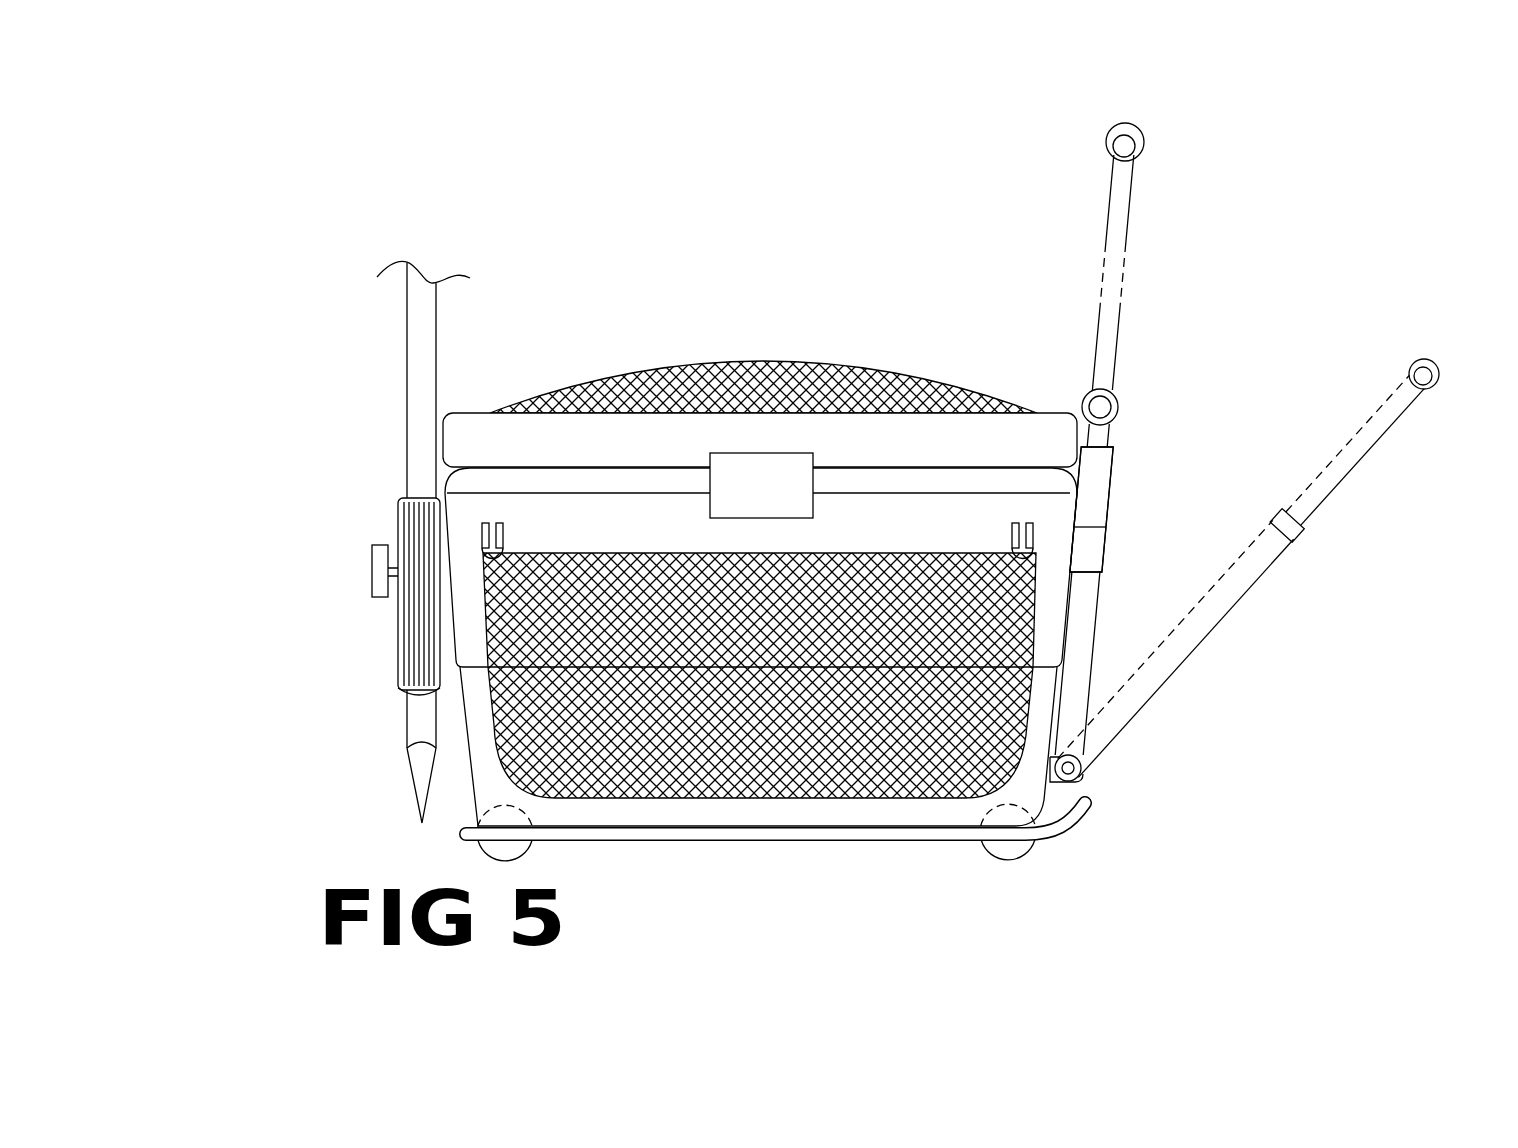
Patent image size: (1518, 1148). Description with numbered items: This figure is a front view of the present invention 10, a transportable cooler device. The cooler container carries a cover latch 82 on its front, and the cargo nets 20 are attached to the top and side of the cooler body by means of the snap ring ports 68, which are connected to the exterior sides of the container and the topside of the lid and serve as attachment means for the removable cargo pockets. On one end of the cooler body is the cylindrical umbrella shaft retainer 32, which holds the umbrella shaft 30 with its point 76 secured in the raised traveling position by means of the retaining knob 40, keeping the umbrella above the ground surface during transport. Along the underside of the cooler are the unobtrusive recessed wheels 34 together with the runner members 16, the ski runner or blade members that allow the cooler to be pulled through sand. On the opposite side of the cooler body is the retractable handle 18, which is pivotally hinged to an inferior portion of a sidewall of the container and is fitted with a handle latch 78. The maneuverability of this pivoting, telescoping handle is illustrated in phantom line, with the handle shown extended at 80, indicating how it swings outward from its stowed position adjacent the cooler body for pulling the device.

The present invention 10 is at (527, 243).
The runner members 16 is at (1069, 838).
The retractable handle 18 is at (1084, 395).
The cargo nets 20 is at (795, 361).
The umbrella shaft 30 is at (394, 465).
The umbrella shaft retainer 32 is at (393, 642).
The wheels 34 is at (520, 860).
The retaining knob 40 is at (372, 560).
The snap ring ports 68 is at (507, 525).
The point 76 is at (407, 780).
The handle latch 78 is at (1095, 550).
The extended handle position 80 is at (1122, 287).
The cover latch 82 is at (795, 503).